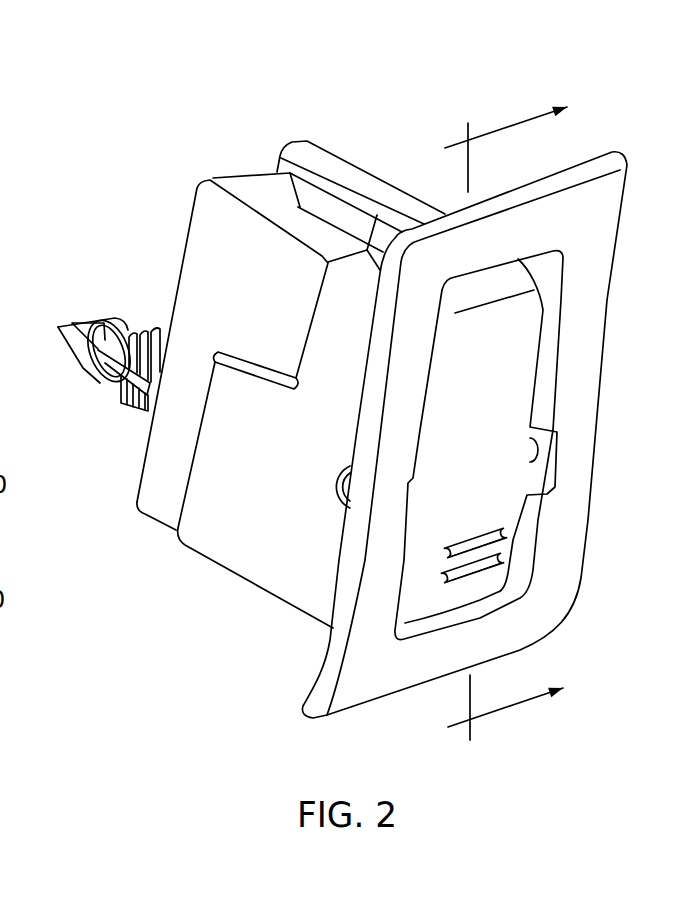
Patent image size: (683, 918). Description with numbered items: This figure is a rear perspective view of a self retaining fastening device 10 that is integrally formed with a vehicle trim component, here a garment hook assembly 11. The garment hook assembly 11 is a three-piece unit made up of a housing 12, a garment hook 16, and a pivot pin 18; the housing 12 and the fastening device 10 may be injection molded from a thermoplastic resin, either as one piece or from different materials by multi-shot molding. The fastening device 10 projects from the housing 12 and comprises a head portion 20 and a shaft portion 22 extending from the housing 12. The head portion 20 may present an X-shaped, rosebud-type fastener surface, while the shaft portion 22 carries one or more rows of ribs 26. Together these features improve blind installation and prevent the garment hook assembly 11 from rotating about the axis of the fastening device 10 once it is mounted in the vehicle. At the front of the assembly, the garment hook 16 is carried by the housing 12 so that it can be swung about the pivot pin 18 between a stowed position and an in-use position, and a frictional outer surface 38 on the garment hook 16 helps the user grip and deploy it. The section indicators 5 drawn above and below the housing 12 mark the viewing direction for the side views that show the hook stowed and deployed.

The self retaining fastening device 10 is at (113, 256).
The garment hook assembly 11 is at (513, 90).
The housing 12 is at (230, 185).
The garment hook 16 is at (480, 436).
The pivot pin 18 is at (345, 495).
The head portion 20 is at (73, 303).
The shaft portion 22 is at (113, 406).
The ribs 26 is at (156, 321).
The frictional outer surface 38 is at (477, 527).
The section line 5- 5 is at (497, 426).